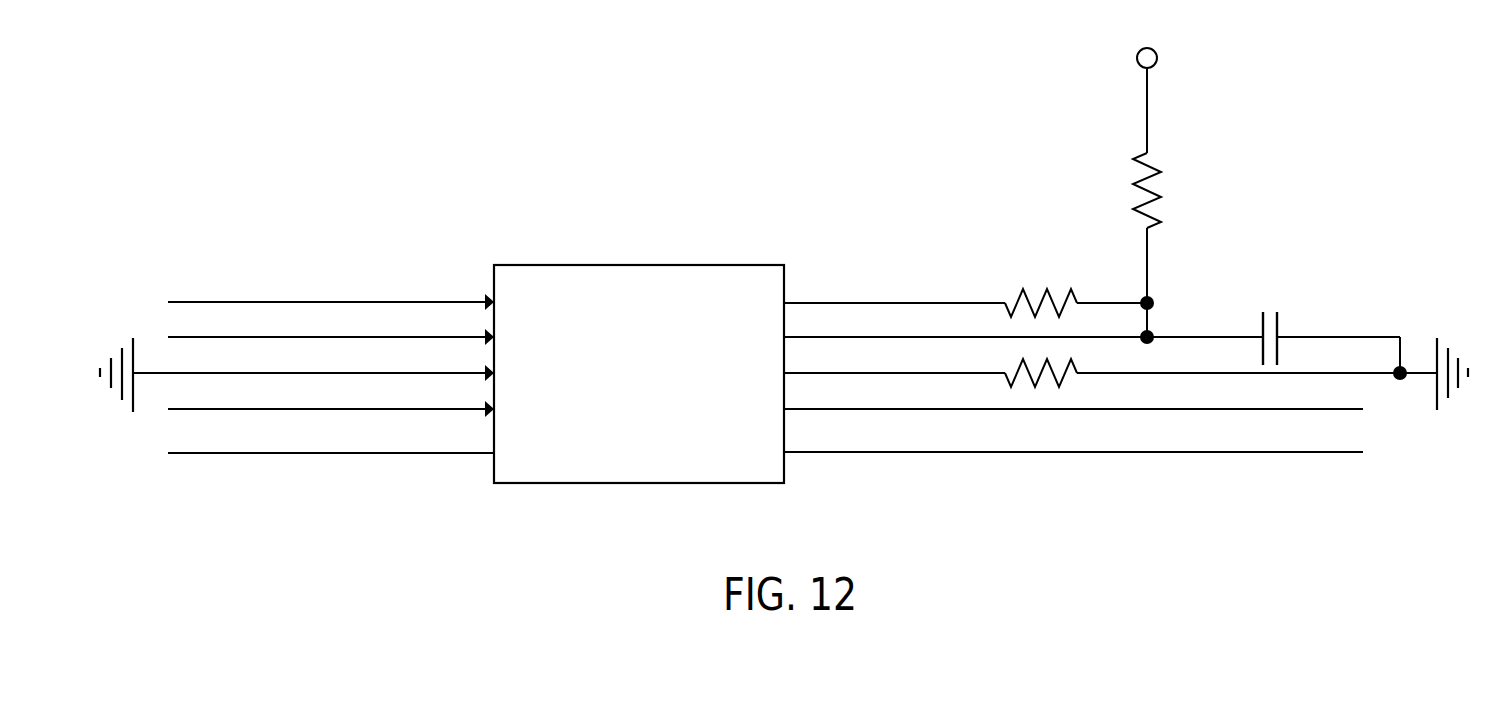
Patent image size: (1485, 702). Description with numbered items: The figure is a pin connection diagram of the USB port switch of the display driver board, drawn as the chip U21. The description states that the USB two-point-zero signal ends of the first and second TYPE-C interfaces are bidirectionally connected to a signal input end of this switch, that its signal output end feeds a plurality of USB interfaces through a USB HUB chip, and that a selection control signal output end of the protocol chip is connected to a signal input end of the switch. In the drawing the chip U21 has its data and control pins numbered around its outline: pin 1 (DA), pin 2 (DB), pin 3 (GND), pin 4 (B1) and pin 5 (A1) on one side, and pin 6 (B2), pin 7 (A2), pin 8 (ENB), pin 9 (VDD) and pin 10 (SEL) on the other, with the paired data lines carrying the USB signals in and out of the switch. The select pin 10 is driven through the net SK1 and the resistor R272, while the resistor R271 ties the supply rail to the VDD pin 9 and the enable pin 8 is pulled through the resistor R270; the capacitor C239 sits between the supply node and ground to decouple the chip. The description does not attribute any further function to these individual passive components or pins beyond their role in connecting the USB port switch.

The USB switch IC AZAW2210F U21 is at (640, 265).
The resistor 100K R270 is at (1182, 366).
The resistor 10R R271 is at (1162, 176).
The resistor 10K R272 is at (1036, 293).
The capacitor 0.1uF/16V C239 is at (1305, 342).
The net label SK1 is at (887, 284).
The pin 1 DA 1 is at (331, 289).
The pin 2 DB 2 is at (331, 325).
The pin 3 GND 3 is at (297, 375).
The pin 4 B1 4 is at (331, 396).
The pin 5 A1 5 is at (331, 438).
The pin 6 B2 6 is at (1073, 437).
The pin 7 A2 7 is at (1073, 393).
The pin 8 ENB 8 is at (894, 361).
The pin 9 VDD 9 is at (1023, 326).
The pin 10 SEL 10 is at (894, 288).